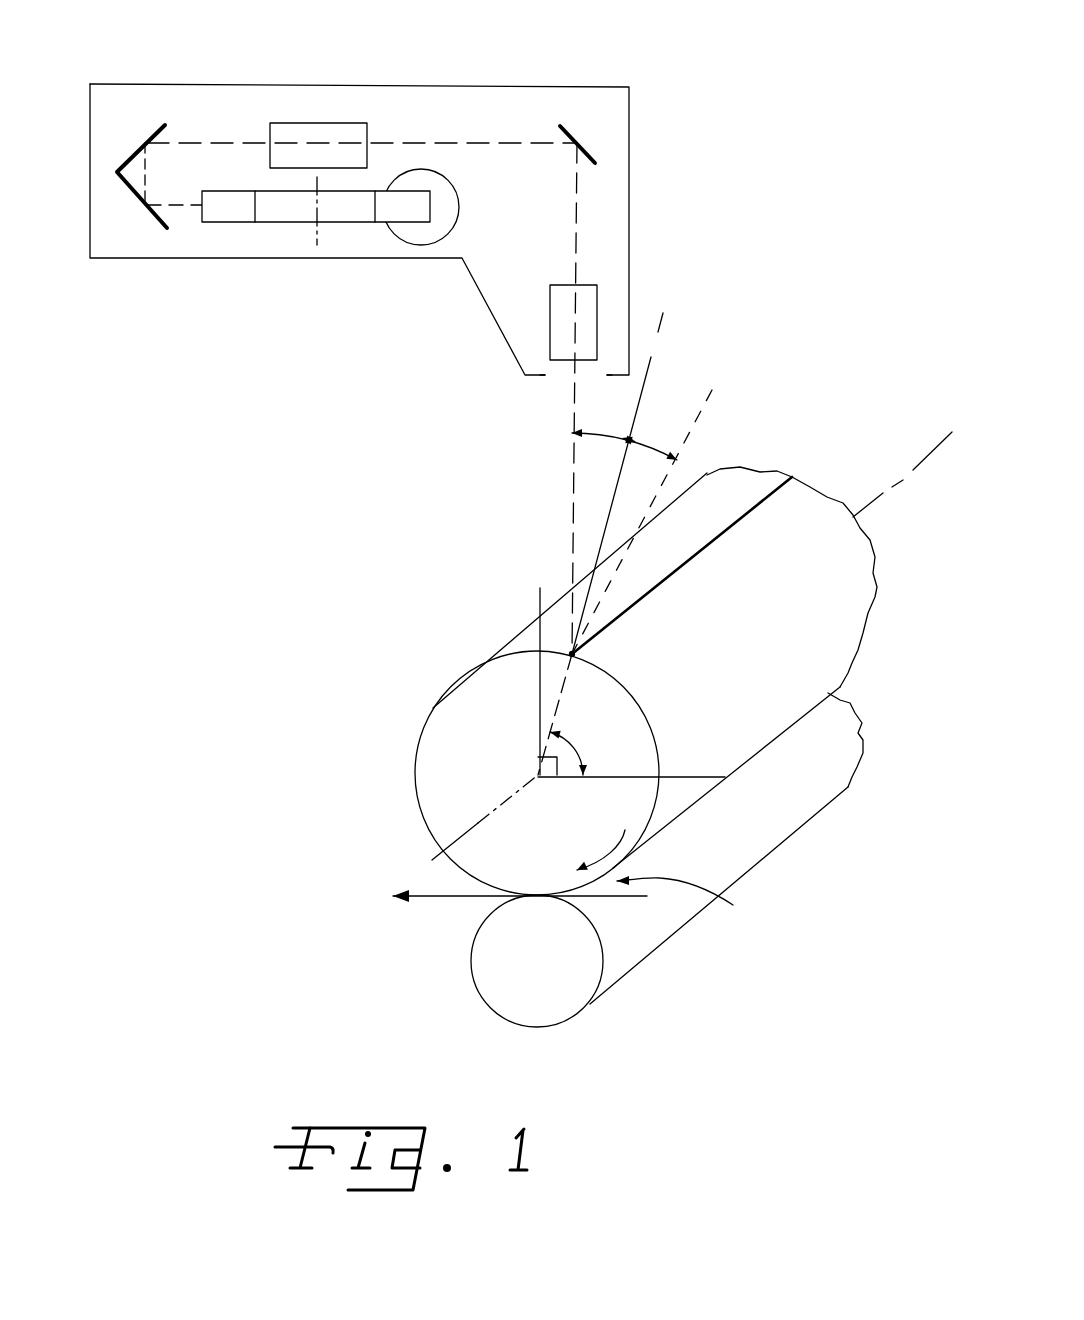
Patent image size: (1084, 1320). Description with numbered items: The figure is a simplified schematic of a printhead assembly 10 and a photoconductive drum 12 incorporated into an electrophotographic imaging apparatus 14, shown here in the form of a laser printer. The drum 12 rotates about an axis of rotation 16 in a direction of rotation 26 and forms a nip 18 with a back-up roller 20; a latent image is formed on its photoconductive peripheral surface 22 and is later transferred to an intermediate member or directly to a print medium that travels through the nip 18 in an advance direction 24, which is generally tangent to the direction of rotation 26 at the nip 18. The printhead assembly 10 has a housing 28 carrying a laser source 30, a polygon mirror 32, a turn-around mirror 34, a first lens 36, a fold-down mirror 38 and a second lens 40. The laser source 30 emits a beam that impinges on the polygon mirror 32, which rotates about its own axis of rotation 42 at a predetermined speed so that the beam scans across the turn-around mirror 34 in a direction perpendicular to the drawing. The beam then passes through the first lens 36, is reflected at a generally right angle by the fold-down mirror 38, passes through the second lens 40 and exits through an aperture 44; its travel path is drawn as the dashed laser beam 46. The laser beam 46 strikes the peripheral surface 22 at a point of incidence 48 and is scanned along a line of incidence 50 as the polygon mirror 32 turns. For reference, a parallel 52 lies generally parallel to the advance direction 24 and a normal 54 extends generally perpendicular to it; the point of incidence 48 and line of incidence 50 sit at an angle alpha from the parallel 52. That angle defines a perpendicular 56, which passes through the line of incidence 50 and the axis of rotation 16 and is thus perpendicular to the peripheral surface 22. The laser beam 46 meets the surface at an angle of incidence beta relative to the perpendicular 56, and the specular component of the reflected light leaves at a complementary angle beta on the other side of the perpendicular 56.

The printhead assembly 10 is at (480, 85).
The photoconductive drum 12 is at (413, 738).
The electrophotographic imaging apparatus 14 is at (258, 653).
The axis of rotation 16 is at (694, 646).
The nip 18 is at (719, 895).
The back-up roller 20 is at (567, 1022).
The photoconductive peripheral surface 22 is at (845, 607).
The advance direction 24 is at (443, 897).
The direction of rotation 26 is at (637, 848).
The housing 28 is at (567, 87).
The laser source 30 is at (415, 245).
The polygon mirror 32 is at (230, 222).
The turn-around mirror 34 is at (162, 125).
The first lens 36 is at (327, 122).
The fold-down mirror 38 is at (590, 152).
The second lens 40 is at (598, 298).
The axis of rotation 42 is at (310, 237).
The aperture 44 is at (558, 378).
The laser beam 46 is at (572, 505).
The point of incidence 48 is at (573, 657).
The line of incidence 50 is at (698, 553).
The parallel 52 is at (693, 782).
The normal 54 is at (537, 632).
The perpendicular 56 is at (660, 330).